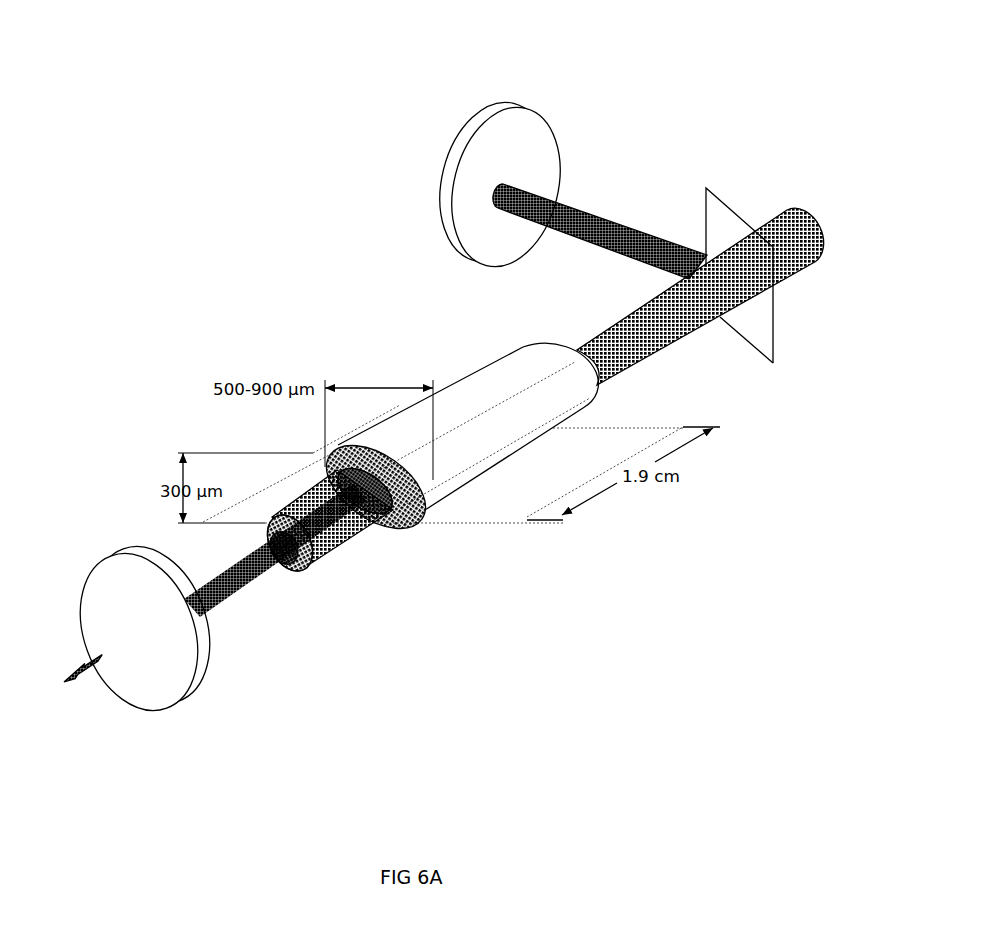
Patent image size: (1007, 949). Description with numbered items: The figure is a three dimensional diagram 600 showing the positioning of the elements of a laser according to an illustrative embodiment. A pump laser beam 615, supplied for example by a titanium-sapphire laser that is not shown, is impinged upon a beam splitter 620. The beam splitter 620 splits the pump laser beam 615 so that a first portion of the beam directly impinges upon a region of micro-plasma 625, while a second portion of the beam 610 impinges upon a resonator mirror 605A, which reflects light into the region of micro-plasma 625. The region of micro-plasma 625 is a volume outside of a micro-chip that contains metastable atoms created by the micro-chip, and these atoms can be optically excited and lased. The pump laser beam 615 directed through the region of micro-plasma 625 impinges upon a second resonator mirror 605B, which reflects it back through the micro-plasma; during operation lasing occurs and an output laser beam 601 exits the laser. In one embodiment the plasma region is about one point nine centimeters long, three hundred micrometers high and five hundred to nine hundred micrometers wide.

The three dimensional diagram 600 is at (704, 99).
The output laser beam 601 is at (78, 682).
The resonator mirror 605A is at (454, 184).
The resonator mirror 605B is at (205, 697).
The second portion of the beam 610 is at (668, 235).
The pump laser beam 615 is at (785, 207).
The beam splitter 620 is at (773, 363).
The region of micro-plasma 625 is at (497, 362).